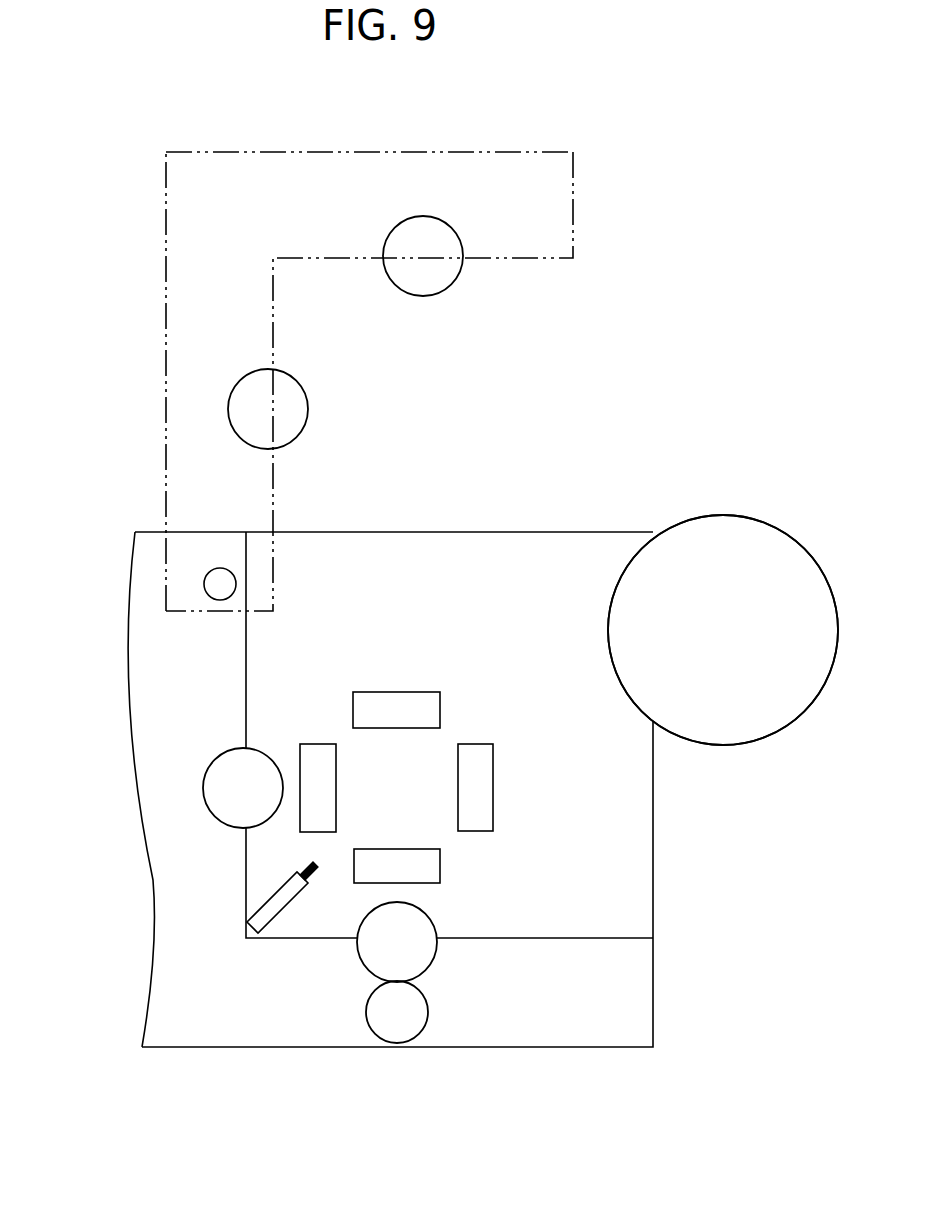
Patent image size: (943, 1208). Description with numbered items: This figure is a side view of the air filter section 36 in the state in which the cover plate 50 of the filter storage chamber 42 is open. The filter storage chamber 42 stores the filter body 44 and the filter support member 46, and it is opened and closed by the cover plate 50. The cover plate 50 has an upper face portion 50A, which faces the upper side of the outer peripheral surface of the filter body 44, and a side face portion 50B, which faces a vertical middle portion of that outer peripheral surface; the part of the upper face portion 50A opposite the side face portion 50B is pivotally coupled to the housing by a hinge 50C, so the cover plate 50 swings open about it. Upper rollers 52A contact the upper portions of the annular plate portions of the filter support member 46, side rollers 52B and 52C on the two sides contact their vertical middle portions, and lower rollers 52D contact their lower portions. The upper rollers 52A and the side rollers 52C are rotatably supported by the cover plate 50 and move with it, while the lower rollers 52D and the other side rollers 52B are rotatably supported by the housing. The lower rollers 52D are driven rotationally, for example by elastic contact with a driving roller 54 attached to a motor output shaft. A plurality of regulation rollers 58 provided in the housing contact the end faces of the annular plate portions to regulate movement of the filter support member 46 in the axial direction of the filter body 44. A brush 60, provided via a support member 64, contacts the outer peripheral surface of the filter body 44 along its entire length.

The air filter section 36 is at (691, 250).
The filter storage chamber 42 is at (483, 542).
The filter body 44 is at (713, 530).
The filter support member 46 is at (723, 630).
The cover plate 50 is at (575, 218).
The upper face portion 50A is at (166, 345).
The side face portion 50B is at (457, 151).
The hinge 50C is at (218, 572).
The upper rollers 52A is at (298, 405).
The side rollers 52B is at (215, 770).
The side rollers 52C is at (427, 283).
The lower rollers 52D is at (367, 953).
The driving roller 54 is at (412, 1030).
The regulation rollers 58 is at (312, 748).
The brush 60 is at (298, 867).
The support member 64 is at (267, 920).